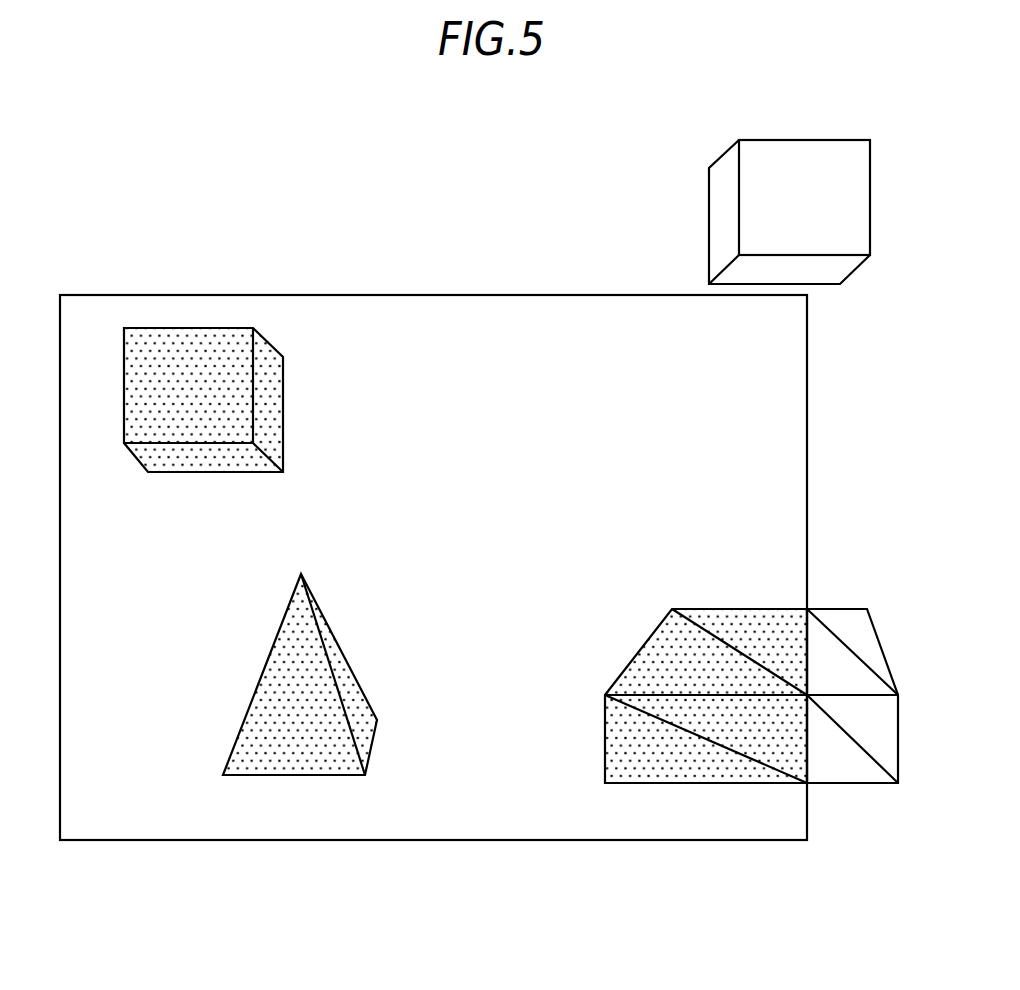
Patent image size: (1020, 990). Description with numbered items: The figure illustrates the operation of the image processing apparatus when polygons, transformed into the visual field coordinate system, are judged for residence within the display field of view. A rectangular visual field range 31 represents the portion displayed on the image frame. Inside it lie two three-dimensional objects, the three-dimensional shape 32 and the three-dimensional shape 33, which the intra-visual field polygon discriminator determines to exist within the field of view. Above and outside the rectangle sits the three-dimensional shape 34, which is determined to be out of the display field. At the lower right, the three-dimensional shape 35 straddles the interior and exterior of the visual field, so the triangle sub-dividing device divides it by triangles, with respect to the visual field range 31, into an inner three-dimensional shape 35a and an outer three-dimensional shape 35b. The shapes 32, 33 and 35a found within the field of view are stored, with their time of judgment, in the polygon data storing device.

The visual field range 31 is at (807, 463).
The 3D shape 32 is at (190, 327).
The 3D shape 33 is at (298, 777).
The 3D shape 34 is at (787, 147).
The 3D shape 35 is at (751, 782).
The 3D shape 35a is at (685, 770).
The 3D shape 35b is at (852, 755).